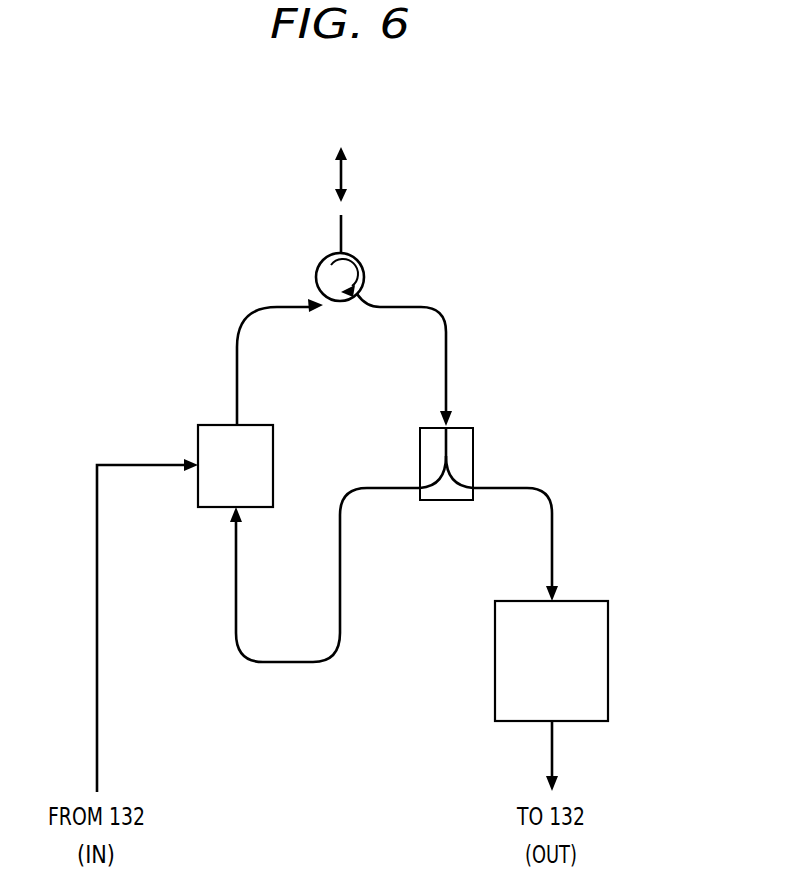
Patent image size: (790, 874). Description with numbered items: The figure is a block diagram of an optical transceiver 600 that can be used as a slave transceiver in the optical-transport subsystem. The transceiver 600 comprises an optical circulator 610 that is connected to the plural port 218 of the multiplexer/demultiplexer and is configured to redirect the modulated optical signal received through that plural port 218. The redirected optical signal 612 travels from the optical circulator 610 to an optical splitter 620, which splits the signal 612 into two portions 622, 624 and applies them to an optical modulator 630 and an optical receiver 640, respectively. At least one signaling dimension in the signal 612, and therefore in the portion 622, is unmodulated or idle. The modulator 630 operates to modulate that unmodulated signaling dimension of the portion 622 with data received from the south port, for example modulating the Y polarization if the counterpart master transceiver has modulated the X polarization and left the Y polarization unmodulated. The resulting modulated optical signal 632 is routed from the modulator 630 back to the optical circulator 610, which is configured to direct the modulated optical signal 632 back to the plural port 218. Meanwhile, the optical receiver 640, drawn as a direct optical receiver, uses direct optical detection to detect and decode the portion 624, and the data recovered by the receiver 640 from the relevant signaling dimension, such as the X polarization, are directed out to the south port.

The optical transceiver 600 is at (358, 82).
The plural port 218 is at (342, 224).
The optical circulator 610 is at (366, 278).
The modulated optical signal 632 is at (252, 316).
The redirected optical signal 612 is at (447, 340).
The optical splitter 620 is at (474, 456).
The portion of signal applied to modulator 622 is at (387, 490).
The portion of signal applied to receiver 624 is at (551, 518).
The optical modulator 630 is at (274, 465).
The optical receiver 640 is at (609, 663).